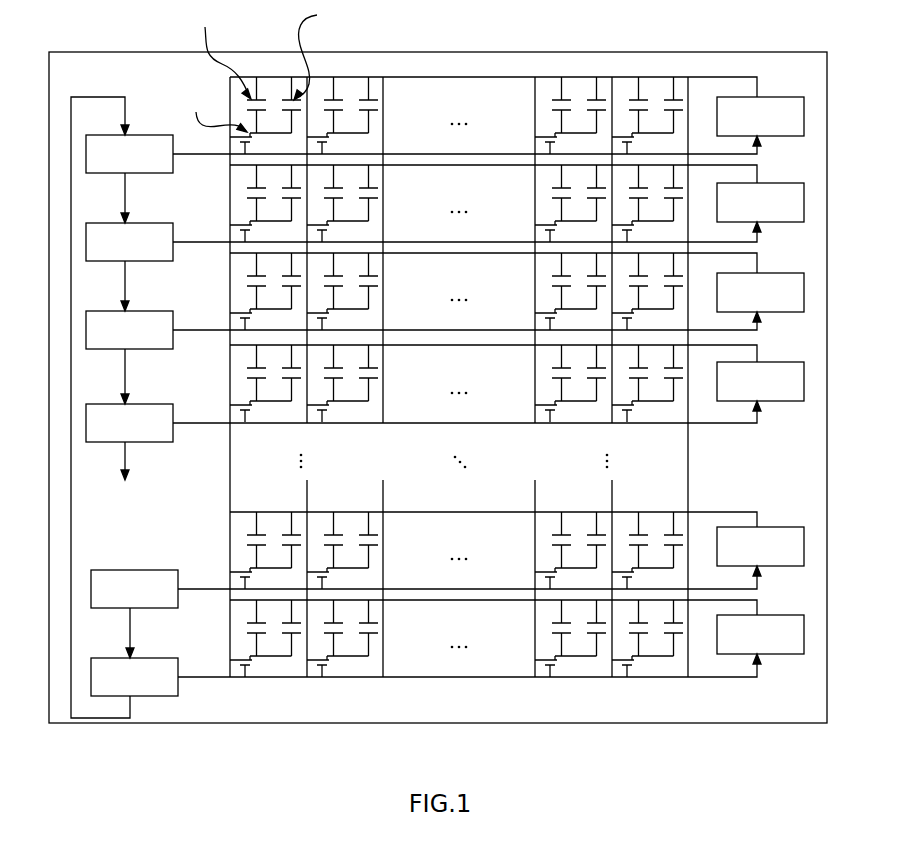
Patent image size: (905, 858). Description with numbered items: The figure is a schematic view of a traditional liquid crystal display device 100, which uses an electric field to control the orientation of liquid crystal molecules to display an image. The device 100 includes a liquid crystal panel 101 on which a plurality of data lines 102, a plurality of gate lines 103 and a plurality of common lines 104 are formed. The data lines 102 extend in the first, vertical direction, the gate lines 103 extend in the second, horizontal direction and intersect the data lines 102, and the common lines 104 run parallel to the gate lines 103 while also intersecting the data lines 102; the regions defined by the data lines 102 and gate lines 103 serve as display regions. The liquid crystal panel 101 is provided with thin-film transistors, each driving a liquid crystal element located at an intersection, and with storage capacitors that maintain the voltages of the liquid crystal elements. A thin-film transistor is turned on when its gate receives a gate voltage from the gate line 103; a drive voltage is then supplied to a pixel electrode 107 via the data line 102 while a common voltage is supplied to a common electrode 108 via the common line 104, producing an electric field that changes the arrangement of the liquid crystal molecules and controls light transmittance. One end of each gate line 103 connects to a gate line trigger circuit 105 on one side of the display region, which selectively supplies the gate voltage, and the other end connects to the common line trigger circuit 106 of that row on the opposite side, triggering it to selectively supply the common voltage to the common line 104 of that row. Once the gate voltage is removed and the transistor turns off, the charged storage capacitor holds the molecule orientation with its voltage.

The liquid crystal display device 100 is at (98, 25).
The liquid crystal panel 101 is at (466, 52).
The data lines 102 is at (467, 382).
The gate lines 103 is at (427, 677).
The common lines 104 is at (706, 77).
The gate trigger circuit 105 is at (160, 697).
The common voltage trigger circuit 106 is at (782, 654).
The pixel electrode 107 is at (265, 115).
The common electrode 108 is at (265, 106).